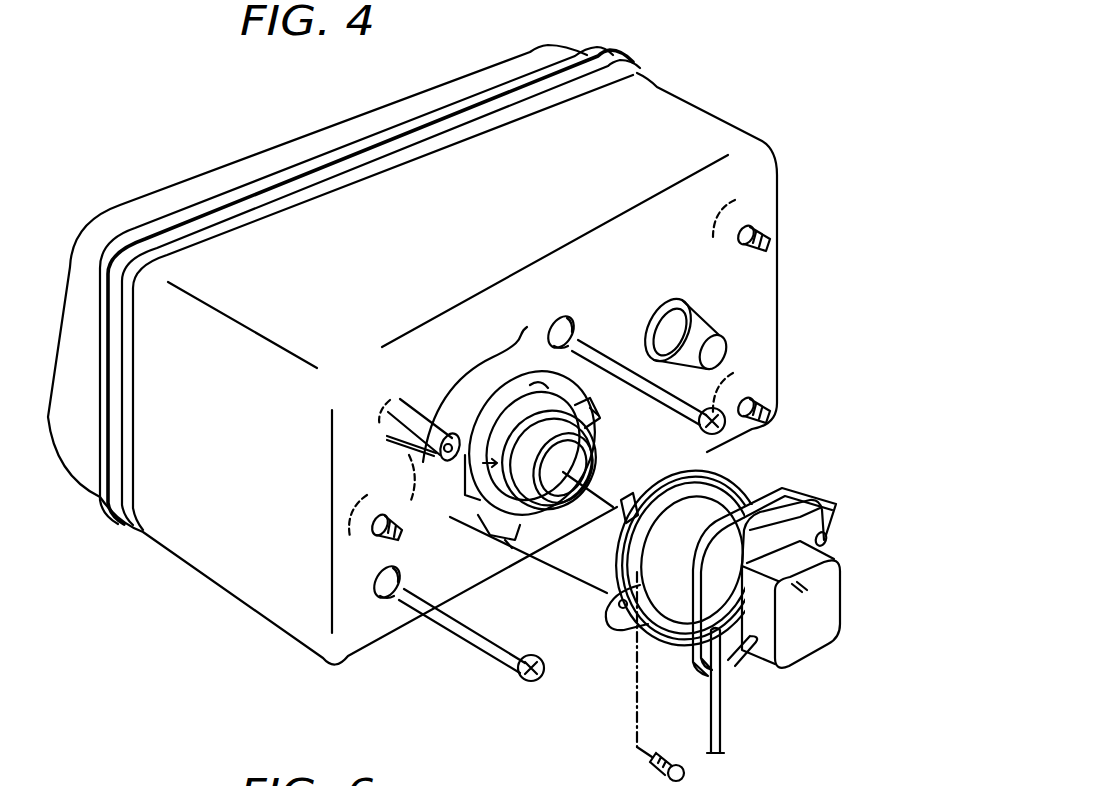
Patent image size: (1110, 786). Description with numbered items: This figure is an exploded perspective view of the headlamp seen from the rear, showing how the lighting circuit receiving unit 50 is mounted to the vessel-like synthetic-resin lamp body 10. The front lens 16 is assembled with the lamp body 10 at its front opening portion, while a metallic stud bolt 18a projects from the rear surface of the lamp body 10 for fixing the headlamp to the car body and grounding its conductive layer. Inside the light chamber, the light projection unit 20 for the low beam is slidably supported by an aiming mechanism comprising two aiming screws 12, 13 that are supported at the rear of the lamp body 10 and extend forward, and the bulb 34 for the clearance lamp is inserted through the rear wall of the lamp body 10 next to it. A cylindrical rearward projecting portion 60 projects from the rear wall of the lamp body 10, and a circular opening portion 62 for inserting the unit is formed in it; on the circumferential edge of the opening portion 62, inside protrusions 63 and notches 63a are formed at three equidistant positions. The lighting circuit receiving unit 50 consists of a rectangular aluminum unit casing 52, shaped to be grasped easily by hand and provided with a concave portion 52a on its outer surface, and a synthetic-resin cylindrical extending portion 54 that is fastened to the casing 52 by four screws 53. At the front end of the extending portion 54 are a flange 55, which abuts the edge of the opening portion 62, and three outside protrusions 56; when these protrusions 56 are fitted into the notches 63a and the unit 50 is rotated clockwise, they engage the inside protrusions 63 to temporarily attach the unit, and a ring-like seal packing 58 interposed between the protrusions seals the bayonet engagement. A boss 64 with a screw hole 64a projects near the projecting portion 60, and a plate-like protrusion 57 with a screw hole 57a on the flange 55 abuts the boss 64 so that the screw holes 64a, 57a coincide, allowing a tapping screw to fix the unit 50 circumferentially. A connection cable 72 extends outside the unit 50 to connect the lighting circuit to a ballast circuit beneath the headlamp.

The lamp body 10 is at (680, 100).
The aiming screw 12 is at (487, 649).
The aiming screw 13 is at (680, 400).
The front lens 16 is at (230, 163).
The stud bolt 18a is at (767, 233).
The light projection unit 20 is at (463, 470).
The bulb 34 is at (723, 323).
The lighting circuit receiving unit 50 is at (731, 585).
The unit casing 52 is at (812, 640).
The concave portion 52a is at (823, 551).
The screws 53 is at (773, 490).
The cylindrical extending portion 54 is at (767, 477).
The flange 55 is at (743, 460).
The outside protrusions 56 is at (625, 493).
The plate-like protrusion 57 is at (605, 617).
The screw hole 57a is at (623, 610).
The seal packing 58 is at (723, 460).
The rearward projecting portion 60 is at (487, 357).
The circular opening portion 62 is at (513, 400).
The inside protrusions 63 is at (430, 407).
The notches 63a is at (548, 370).
The boss 64 is at (378, 438).
The screw hole 64a is at (440, 455).
The connection cable 72 is at (723, 730).